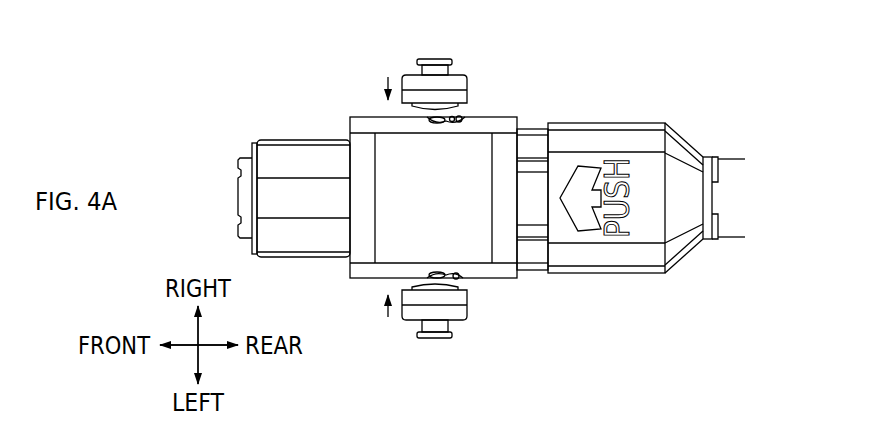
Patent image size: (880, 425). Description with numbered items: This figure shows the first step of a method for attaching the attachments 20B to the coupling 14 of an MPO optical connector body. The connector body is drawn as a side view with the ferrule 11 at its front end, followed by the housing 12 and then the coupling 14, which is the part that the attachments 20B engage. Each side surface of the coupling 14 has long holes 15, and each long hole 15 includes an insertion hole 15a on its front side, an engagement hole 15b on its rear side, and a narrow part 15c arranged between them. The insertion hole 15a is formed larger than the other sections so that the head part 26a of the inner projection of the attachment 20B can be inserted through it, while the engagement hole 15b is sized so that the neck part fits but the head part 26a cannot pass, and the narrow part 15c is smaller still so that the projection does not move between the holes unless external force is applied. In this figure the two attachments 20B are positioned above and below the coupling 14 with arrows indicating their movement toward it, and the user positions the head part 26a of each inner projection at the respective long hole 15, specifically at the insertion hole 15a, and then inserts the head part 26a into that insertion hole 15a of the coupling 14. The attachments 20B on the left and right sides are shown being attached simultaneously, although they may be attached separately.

The ferrule 11 is at (247, 241).
The housing 12 is at (298, 258).
The coupling 14 is at (362, 279).
The long hole 15 is at (548, 40).
The insertion hole 15a is at (447, 118).
The engagement hole 15b is at (463, 118).
The narrow part 15c is at (455, 118).
The attachment 20B is at (470, 54).
The head part 26a is at (434, 288).